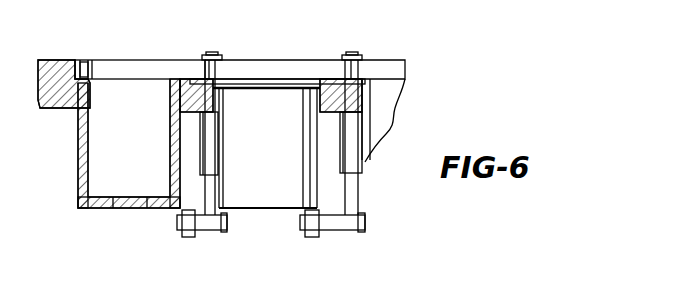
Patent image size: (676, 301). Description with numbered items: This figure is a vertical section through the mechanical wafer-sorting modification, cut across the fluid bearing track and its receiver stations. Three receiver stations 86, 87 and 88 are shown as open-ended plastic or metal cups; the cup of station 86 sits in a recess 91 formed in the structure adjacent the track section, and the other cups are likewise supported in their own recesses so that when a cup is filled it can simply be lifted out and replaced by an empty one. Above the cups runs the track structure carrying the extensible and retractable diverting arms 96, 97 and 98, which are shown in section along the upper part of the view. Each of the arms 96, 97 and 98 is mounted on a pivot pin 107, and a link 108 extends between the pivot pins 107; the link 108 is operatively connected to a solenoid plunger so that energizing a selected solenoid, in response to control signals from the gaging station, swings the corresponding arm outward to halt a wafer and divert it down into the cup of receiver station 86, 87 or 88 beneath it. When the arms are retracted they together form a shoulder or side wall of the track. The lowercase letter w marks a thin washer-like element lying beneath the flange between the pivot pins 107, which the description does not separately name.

The receiver station 86 is at (84, 160).
The receiver station 87 is at (267, 198).
The receiver station 88 is at (384, 120).
The recess 91 is at (83, 60).
The extensible and retractable arm 96 is at (128, 61).
The extensible and retractable arm 97 is at (283, 63).
The extensible and retractable arm 98 is at (393, 71).
The pivot pin 107 is at (211, 54).
The link 108 is at (203, 228).
The washer w is at (250, 78).